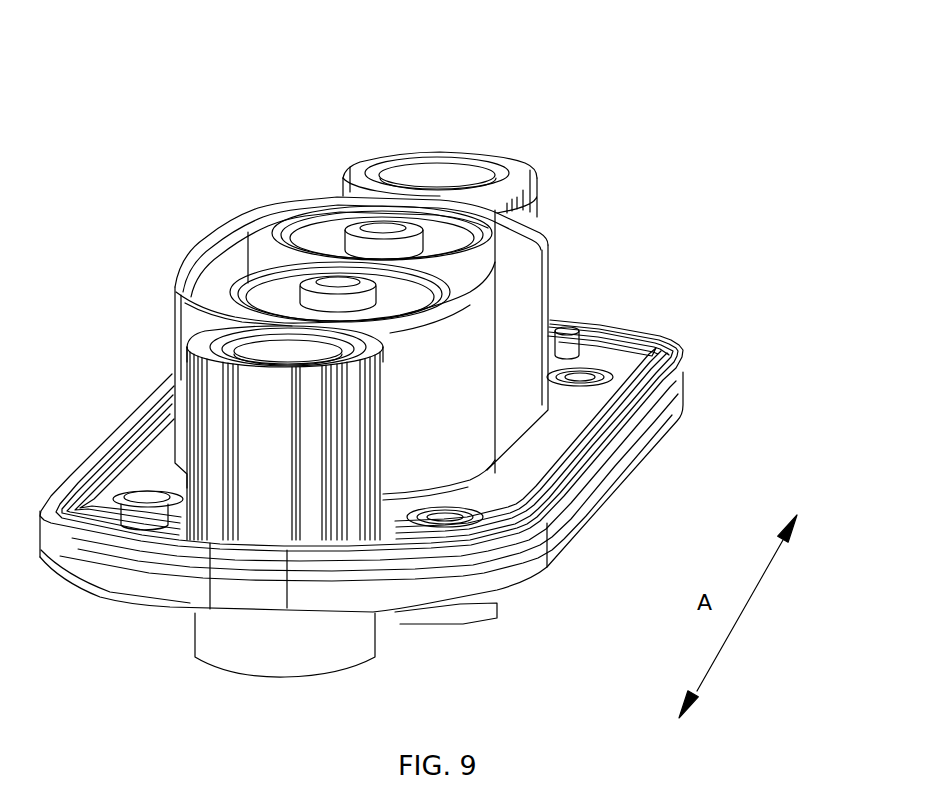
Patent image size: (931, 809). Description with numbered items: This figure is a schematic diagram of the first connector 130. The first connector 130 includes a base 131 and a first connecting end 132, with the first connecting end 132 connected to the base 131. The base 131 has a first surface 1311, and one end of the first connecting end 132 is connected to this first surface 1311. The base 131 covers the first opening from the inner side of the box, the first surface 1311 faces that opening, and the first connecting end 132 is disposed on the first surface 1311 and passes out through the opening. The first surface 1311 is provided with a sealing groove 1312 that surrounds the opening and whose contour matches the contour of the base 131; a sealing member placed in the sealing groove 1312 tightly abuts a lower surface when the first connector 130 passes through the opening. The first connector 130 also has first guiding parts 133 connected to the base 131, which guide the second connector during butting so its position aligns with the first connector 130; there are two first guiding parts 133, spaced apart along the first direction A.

The first connector 130 is at (444, 54).
The base 131 is at (597, 487).
The first surface 1311 is at (567, 397).
The sealing groove 1312 is at (637, 415).
The first connecting end 132 is at (512, 162).
The first guiding part 133 is at (424, 187).